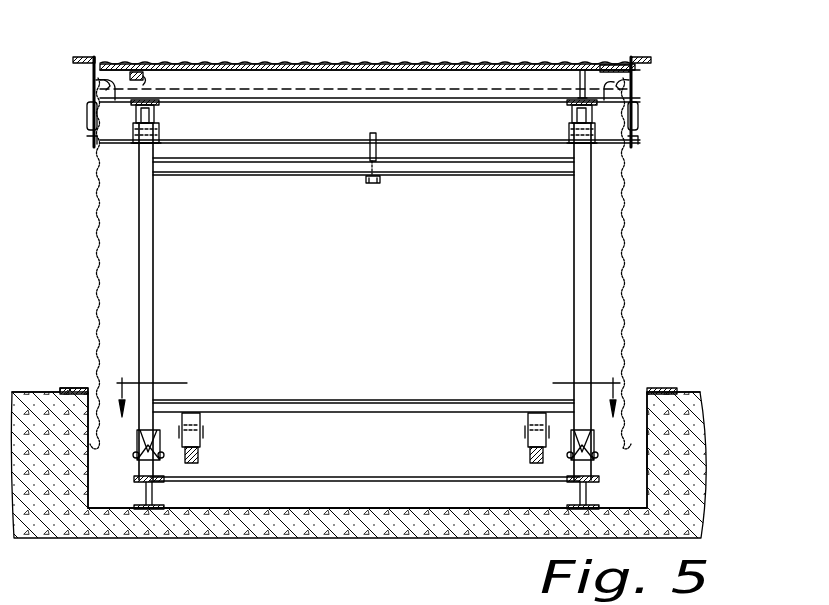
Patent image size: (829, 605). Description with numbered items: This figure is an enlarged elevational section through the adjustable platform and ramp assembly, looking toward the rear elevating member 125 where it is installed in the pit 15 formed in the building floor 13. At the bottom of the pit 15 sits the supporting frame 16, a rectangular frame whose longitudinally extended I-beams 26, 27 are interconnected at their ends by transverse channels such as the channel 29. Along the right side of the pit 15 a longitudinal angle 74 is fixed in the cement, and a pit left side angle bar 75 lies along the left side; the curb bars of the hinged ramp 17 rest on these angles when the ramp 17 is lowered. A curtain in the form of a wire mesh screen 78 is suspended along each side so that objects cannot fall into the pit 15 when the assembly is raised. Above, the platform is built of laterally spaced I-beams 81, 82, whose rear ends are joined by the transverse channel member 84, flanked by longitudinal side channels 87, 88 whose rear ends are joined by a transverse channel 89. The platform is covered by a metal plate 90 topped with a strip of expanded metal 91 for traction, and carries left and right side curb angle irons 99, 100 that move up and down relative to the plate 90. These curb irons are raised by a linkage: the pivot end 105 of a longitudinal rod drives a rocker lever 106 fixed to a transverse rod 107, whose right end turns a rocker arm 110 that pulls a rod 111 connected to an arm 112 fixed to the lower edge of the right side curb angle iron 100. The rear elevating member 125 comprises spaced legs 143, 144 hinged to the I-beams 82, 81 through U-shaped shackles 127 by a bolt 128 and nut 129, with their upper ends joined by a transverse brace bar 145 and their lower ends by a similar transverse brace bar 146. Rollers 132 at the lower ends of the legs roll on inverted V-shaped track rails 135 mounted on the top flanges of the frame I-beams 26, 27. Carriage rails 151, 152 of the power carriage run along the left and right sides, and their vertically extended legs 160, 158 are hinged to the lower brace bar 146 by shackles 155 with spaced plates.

The floor 13 is at (690, 392).
The pit 15 is at (650, 492).
The supporting frame 16 is at (344, 476).
The hinged ramp 17 is at (368, 382).
The I-beam 26 is at (153, 497).
The I-beam 27 is at (579, 497).
The transverse channel 29 is at (391, 494).
The longitudinal angle 74 is at (655, 390).
The pit left side angle bar 75 is at (86, 388).
The wire mesh screen 78 is at (97, 274).
The I-beam 81 is at (136, 72).
The I-beam 82 is at (604, 72).
The transverse channel member 84 is at (277, 100).
The longitudinal side channel 87 is at (112, 92).
The longitudinal side channel 88 is at (613, 92).
The transverse channel 89 is at (617, 68).
The plate 90 is at (578, 70).
The strip of expanded metal 91 is at (481, 63).
The left side curb angle iron 99 is at (84, 57).
The right side curb angle iron 100 is at (650, 61).
The pivot end 105 is at (367, 182).
The rocker lever 106 is at (378, 150).
The transverse rod 107 is at (305, 140).
The rocker arm 110 is at (92, 138).
The rod 111 is at (88, 118).
The arm 112 is at (92, 90).
The rear elevating member 125 is at (594, 236).
The U-shaped shackle 127 is at (164, 100).
The bolt 128 is at (134, 145).
The nut 129 is at (160, 128).
The roller 132 is at (140, 457).
The track rail 135 is at (140, 481).
The leg 143 is at (574, 272).
The leg 144 is at (154, 277).
The transverse brace bar 145 is at (426, 177).
The transverse brace bar 146 is at (386, 396).
The carriage rail 151 is at (199, 456).
The carriage rail 152 is at (529, 460).
The shackle 155 is at (206, 415).
The leg 158 is at (528, 442).
The leg 160 is at (201, 438).